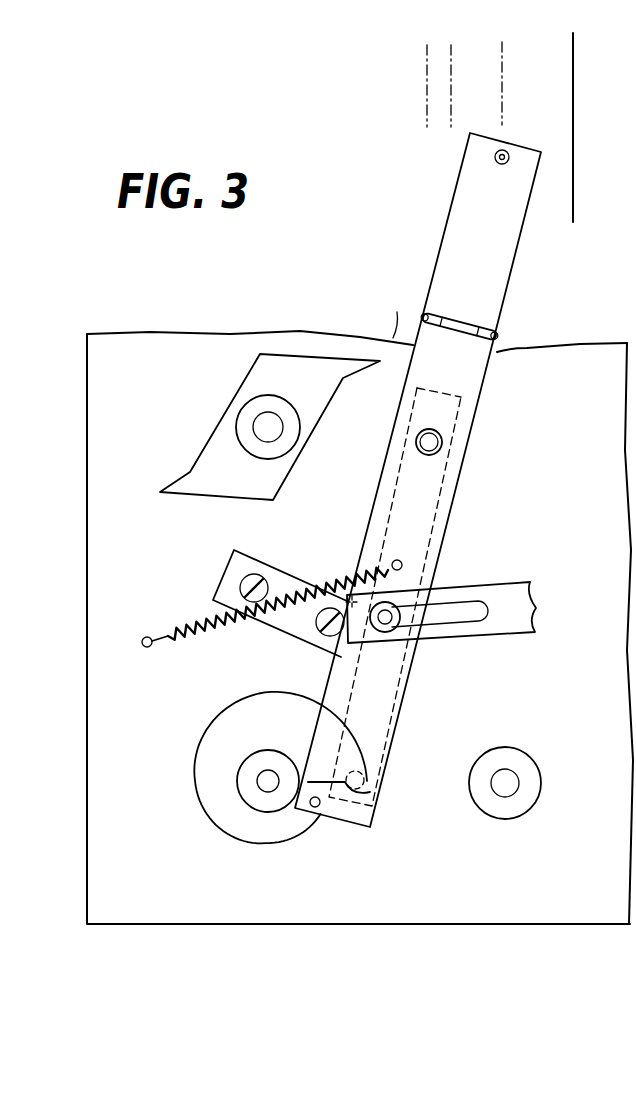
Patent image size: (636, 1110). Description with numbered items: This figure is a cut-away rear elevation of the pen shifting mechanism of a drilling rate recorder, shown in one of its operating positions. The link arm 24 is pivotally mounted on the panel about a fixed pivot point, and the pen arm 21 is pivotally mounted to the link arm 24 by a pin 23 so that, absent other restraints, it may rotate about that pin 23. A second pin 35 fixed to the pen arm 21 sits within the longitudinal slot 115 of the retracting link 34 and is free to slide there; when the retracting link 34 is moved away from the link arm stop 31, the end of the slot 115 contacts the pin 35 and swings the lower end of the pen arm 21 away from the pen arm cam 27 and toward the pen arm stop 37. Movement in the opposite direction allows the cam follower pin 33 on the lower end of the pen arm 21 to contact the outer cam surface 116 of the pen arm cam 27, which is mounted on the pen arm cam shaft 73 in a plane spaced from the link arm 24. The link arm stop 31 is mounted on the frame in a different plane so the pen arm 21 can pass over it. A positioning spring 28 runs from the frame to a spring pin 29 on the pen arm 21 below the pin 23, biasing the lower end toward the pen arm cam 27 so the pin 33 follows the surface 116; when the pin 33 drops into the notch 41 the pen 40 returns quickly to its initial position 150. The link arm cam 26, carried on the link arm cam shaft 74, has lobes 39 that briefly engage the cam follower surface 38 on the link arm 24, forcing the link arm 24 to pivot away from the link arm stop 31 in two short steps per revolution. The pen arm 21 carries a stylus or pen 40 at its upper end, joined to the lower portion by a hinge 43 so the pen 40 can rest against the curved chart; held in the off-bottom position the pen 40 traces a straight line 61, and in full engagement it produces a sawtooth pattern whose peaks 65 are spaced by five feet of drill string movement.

The pen arm 21 is at (458, 495).
The pin 23 is at (442, 442).
The link arm 24 is at (357, 670).
The link arm cam 26 is at (273, 362).
The pen arm cam 27 is at (195, 818).
The positioning spring 28 is at (179, 626).
The spring pin 29 is at (402, 564).
The link arm stop 31 is at (256, 560).
The cam follower pin 33 is at (314, 807).
The retracting link 34 is at (513, 581).
The pin 35 is at (390, 611).
The pen arm stop 37 is at (544, 782).
The cam follower surface 38 is at (402, 437).
The lobes 39 is at (380, 320).
The pen 40 is at (495, 157).
The notch 41 is at (368, 793).
The hinge 43 is at (498, 335).
The straight line 61 is at (427, 65).
The peaks 65 is at (459, 35).
The pen arm cam shaft 73 is at (270, 777).
The link arm cam shaft 74 is at (263, 425).
The longitudinal slot 115 is at (440, 622).
The outer cam surface 116 is at (365, 751).
The initial position 150 is at (503, 50).